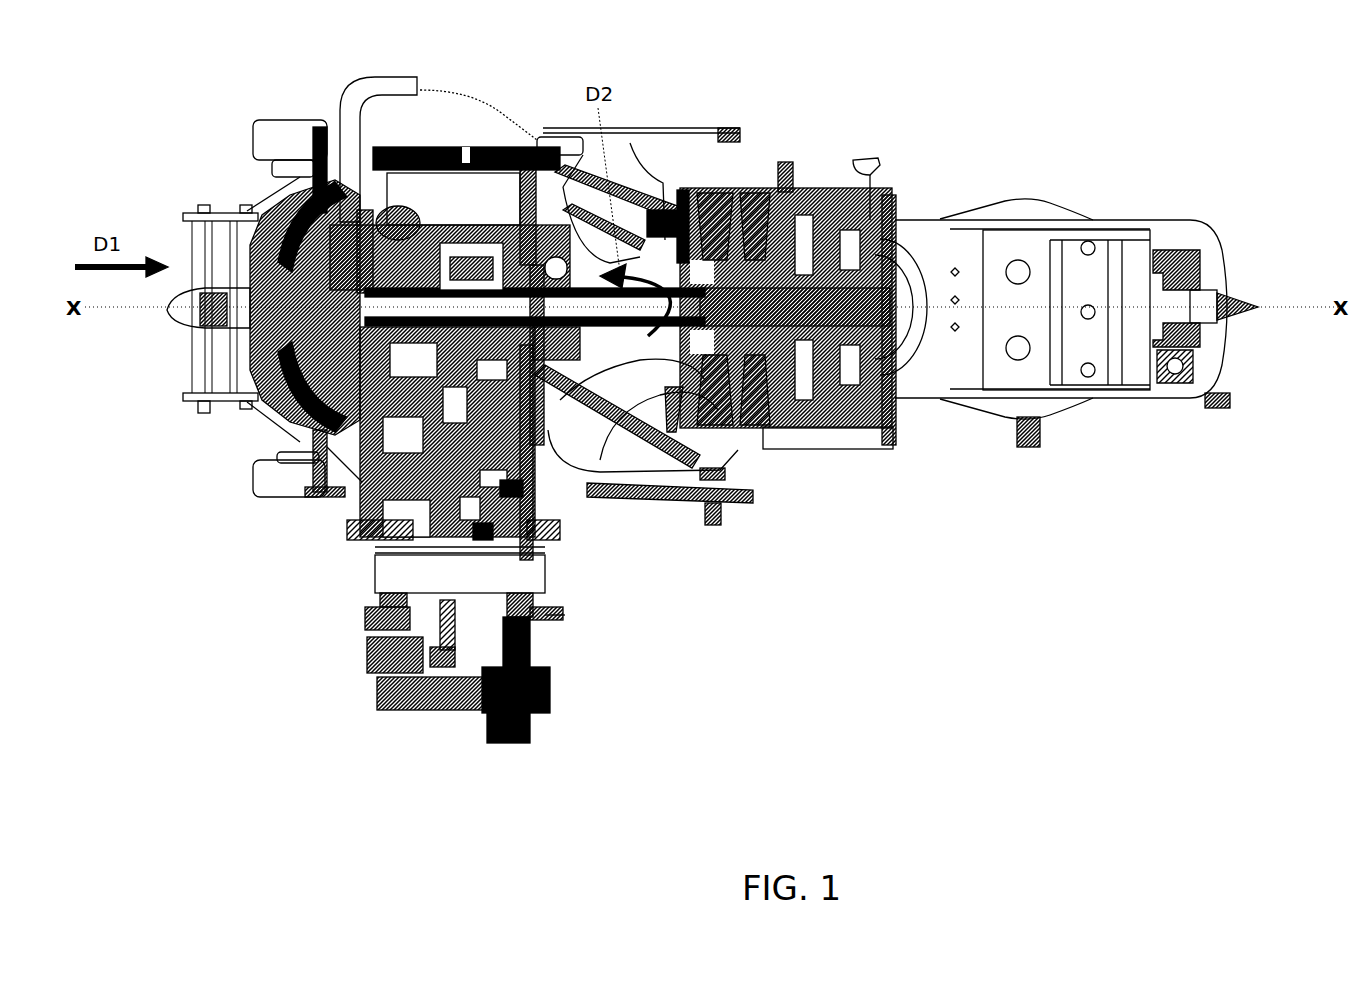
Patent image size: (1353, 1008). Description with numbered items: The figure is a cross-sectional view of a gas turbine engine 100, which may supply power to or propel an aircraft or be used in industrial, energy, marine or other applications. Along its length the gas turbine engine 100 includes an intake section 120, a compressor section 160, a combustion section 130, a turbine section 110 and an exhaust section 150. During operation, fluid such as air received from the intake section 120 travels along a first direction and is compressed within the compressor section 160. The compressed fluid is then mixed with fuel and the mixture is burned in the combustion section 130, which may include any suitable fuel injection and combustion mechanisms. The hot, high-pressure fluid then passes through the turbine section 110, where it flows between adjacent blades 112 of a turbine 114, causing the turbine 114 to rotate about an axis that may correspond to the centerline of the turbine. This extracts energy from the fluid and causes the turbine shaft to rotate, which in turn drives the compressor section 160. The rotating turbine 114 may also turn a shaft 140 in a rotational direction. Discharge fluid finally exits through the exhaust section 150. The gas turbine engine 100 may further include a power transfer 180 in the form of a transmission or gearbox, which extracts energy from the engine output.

The gas turbine engine 100 is at (762, 600).
The turbine section 110 is at (771, 145).
The blades 112 is at (720, 163).
The turbine 114 is at (932, 310).
The intake section 120 is at (158, 442).
The combustion section 130 is at (647, 103).
The shaft 140 is at (775, 422).
The exhaust section 150 is at (1240, 214).
The compressor section 160 is at (518, 106).
The power transfer 180 is at (297, 597).